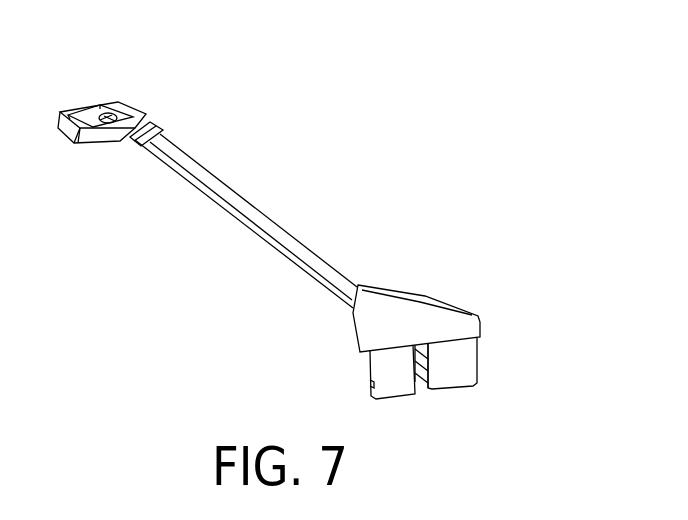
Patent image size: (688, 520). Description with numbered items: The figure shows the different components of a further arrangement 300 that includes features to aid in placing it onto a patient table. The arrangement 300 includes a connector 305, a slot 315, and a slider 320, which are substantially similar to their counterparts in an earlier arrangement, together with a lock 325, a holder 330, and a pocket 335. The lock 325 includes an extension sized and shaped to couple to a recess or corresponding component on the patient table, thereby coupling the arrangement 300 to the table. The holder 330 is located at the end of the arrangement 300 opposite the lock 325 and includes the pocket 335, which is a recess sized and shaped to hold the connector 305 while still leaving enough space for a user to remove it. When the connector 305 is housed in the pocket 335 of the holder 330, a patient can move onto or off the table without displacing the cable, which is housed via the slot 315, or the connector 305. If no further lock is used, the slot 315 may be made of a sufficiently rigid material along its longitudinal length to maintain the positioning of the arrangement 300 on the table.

The arrangement 300 is at (560, 89).
The connector 305 is at (93, 107).
The slot 315 is at (256, 210).
The slider 320 is at (153, 121).
The lock 325 is at (463, 363).
The holder 330 is at (120, 103).
The pocket 335 is at (138, 121).